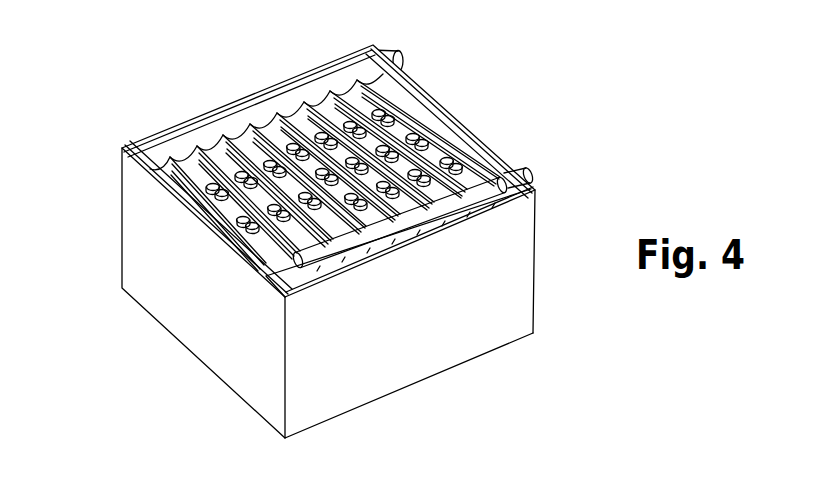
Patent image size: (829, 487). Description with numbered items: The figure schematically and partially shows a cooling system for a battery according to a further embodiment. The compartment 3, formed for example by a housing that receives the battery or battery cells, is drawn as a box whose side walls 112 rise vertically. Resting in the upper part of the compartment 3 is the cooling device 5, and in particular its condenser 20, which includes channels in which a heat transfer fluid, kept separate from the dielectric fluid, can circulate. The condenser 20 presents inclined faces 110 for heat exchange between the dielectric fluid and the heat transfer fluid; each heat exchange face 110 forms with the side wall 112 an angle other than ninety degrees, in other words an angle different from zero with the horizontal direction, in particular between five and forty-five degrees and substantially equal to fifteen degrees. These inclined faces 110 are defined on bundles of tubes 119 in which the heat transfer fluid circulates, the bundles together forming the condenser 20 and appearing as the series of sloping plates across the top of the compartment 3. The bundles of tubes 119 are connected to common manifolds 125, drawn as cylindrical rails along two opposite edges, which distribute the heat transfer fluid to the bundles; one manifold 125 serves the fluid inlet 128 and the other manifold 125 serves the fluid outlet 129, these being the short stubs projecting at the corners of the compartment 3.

The compartment 3 is at (428, 350).
The cooling device 5 is at (125, 350).
The condenser 20 is at (470, 105).
The inclined faces 110 is at (210, 150).
The side walls 112 is at (357, 383).
The bundles of tubes 119 is at (288, 95).
The common manifolds 125 is at (160, 152).
The fluid inlet 128 is at (398, 60).
The fluid outlet 129 is at (521, 172).